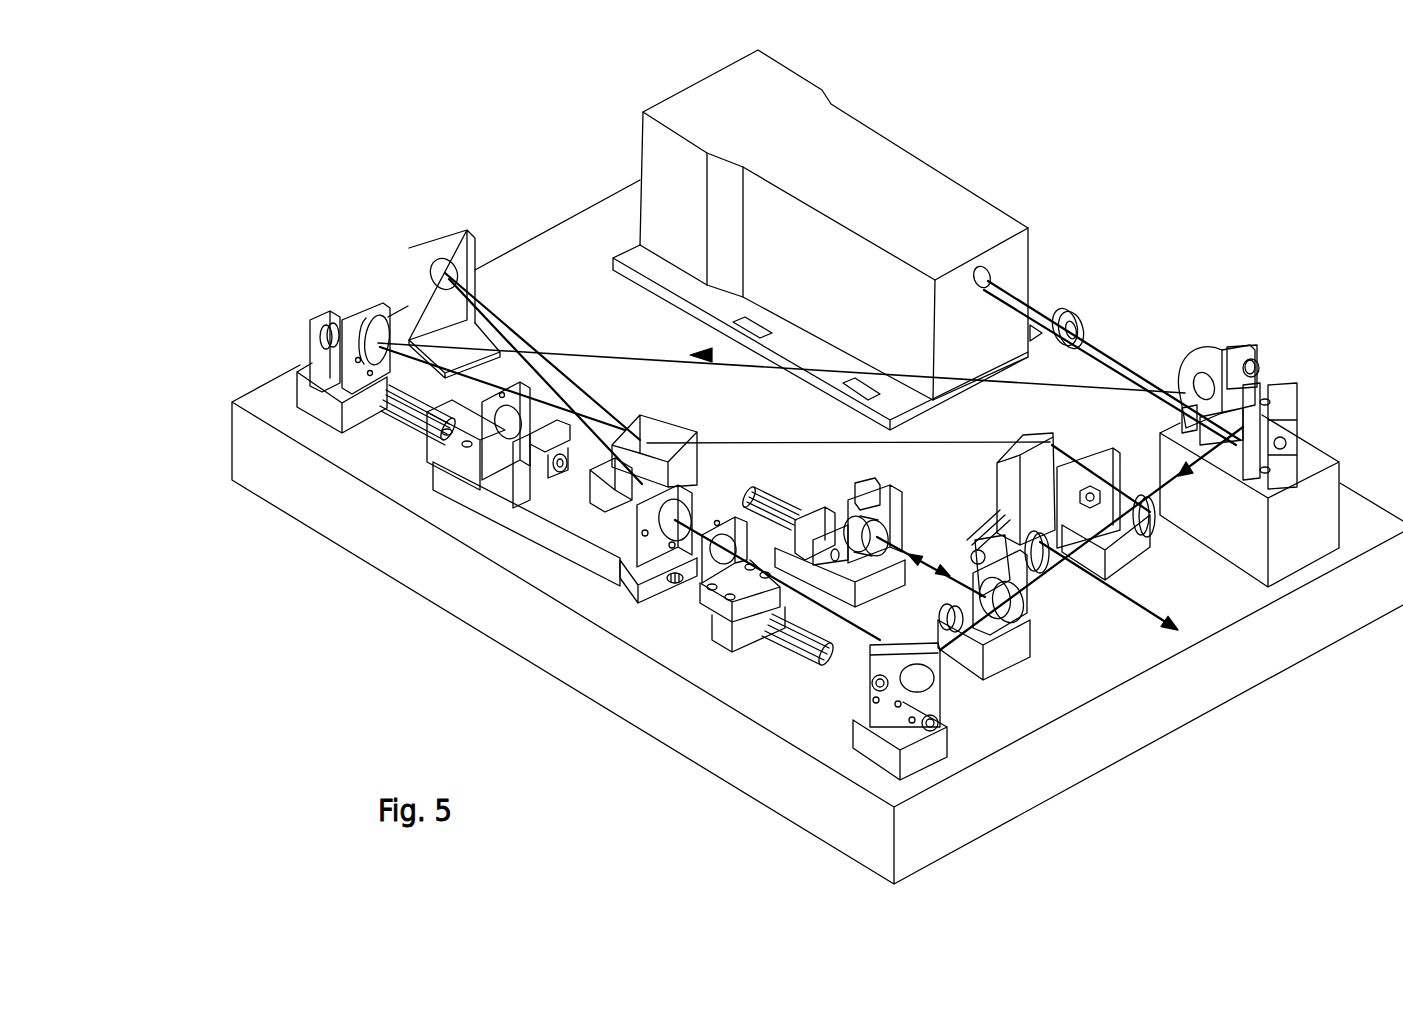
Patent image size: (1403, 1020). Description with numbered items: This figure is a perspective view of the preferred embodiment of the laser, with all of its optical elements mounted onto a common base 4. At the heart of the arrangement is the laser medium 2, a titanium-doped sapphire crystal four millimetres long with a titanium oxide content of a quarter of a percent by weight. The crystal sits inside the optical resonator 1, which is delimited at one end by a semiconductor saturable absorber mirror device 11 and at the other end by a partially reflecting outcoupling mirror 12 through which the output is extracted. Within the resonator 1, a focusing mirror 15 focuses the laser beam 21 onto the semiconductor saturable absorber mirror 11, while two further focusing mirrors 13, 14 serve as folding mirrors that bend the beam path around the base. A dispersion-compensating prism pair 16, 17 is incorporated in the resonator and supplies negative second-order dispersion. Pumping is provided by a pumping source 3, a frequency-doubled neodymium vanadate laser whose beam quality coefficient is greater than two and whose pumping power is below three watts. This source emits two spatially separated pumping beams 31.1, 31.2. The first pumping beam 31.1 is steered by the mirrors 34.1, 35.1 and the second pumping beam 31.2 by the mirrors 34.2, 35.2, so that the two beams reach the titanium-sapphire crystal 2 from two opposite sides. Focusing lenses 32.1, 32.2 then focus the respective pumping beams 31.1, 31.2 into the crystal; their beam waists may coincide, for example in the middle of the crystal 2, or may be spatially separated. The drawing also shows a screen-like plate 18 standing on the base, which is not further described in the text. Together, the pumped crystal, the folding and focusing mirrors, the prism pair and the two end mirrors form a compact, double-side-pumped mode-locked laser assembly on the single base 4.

The optical resonator 1 is at (573, 340).
The laser medium 2 is at (590, 505).
The pumping source 3 is at (652, 137).
The base 4 is at (1316, 634).
The semiconductor saturable absorber mirror device 11 is at (880, 537).
The partially reflecting outcoupling mirror 12 is at (1105, 478).
The focusing mirror 13 is at (668, 528).
The focusing mirror 14 is at (522, 478).
The focusing mirror 15 is at (1012, 610).
The dispersion-compensating prism 16 is at (655, 437).
The dispersion-compensating prism 17 is at (1051, 444).
The screen 18 is at (447, 272).
The laser beam 21 is at (800, 446).
The pumping beam 31.1 is at (606, 357).
The pumping beam 31.2 is at (1200, 468).
The focusing lens 32.1 is at (500, 430).
The focusing lens 32.2 is at (722, 557).
The mirror 34.1 is at (1203, 358).
The mirror 34.2 is at (1258, 395).
The mirror 35.1 is at (370, 340).
The mirror 35.2 is at (922, 680).